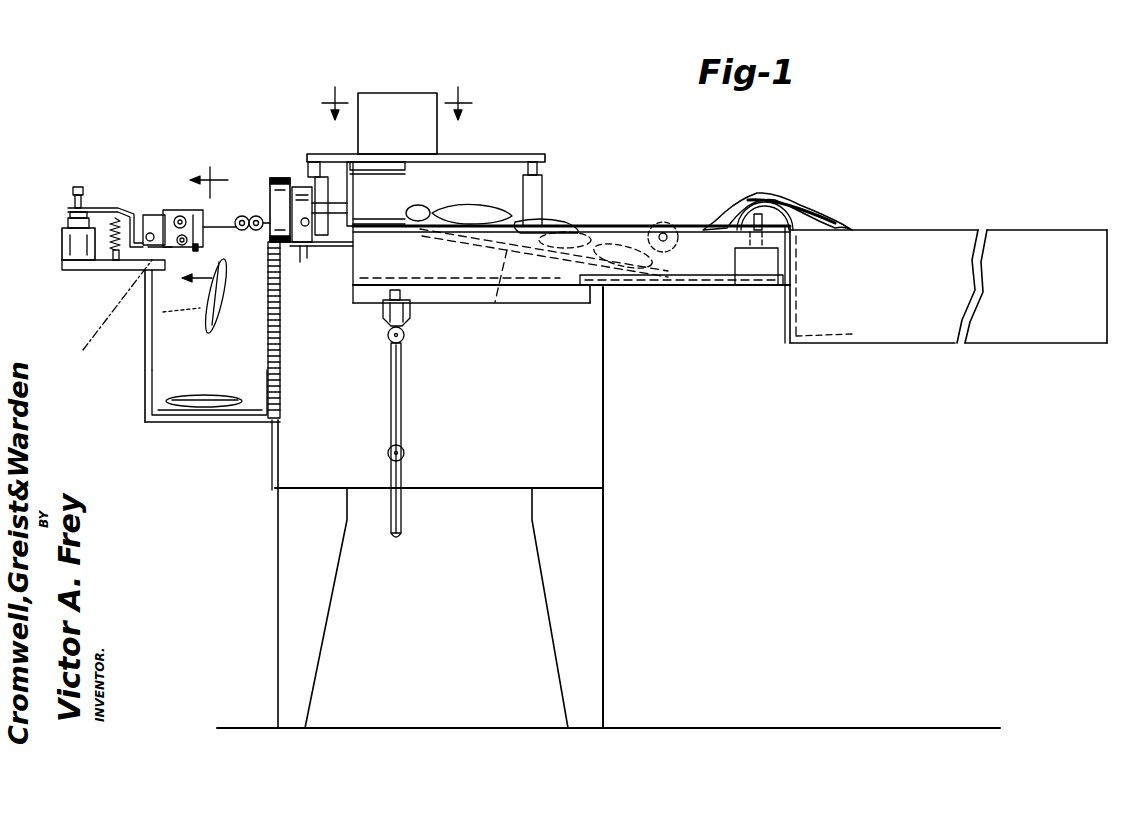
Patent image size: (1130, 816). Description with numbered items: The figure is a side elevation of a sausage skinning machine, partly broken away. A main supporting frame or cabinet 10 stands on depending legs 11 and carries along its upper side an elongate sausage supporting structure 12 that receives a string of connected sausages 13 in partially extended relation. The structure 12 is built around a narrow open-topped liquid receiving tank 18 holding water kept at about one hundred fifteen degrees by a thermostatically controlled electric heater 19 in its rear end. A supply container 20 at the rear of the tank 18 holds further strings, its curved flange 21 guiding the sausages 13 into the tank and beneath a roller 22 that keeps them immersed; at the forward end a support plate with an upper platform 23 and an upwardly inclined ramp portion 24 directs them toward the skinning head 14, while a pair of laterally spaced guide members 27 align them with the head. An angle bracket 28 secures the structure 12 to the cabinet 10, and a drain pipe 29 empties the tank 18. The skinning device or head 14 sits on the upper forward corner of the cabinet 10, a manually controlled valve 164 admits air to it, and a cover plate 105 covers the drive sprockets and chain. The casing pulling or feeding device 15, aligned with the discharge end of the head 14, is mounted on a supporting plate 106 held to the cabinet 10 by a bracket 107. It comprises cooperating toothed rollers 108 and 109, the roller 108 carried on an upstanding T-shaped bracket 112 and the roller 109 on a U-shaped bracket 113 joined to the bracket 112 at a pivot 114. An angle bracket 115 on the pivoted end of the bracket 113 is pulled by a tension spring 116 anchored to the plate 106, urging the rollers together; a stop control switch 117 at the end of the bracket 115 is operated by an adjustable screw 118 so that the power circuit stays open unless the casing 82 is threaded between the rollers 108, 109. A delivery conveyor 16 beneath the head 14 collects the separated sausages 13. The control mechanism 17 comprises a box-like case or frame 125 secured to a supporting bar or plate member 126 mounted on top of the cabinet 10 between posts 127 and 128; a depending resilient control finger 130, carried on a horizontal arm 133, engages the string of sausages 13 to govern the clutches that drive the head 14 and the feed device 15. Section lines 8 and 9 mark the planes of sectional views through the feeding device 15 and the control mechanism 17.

The section line 8- 8 is at (204, 229).
The section line 9- 9 is at (392, 101).
The main supporting frame or cabinet 10 is at (603, 378).
The depending legs 11 is at (603, 523).
The sausage supporting structure 12 is at (622, 290).
The string of connected sausages 13 is at (717, 222).
The sausage skinning device or head 14 is at (295, 182).
The casing pulling or feeding device 15 is at (182, 208).
The delivery conveyor 16 is at (178, 422).
The control mechanism 17 is at (371, 93).
The liquid receiving tank 18 is at (697, 290).
The thermostatically controlled electric heater 19 is at (743, 290).
The supply container 20 is at (840, 334).
The curved flange 21 is at (800, 232).
The roller 22 is at (665, 222).
The upper platform 23 is at (387, 228).
The upwardly inclined ramp portion 24 is at (495, 302).
The guide members 27 is at (403, 207).
The angle bracket 28 is at (553, 305).
The drain pipe 29 is at (414, 305).
The casing 82 is at (95, 327).
The cover plate 105 is at (267, 257).
The supporting plate 106 is at (70, 264).
The bracket 107 is at (145, 353).
The roller 108 is at (200, 213).
The roller 109 is at (200, 250).
The T-shaped bracket 112 is at (157, 215).
The U-shaped bracket 113 is at (170, 247).
The pivot 114 is at (152, 228).
The angle bracket 115 is at (68, 211).
The tension spring 116 is at (117, 258).
The stop control switch 117 is at (65, 247).
The adjustable screw 118 is at (73, 192).
The box-like case or frame 125 is at (393, 93).
The supporting bar or plate member 126 is at (490, 148).
The post 127 is at (542, 194).
The post 128 is at (302, 185).
The control finger 130 is at (353, 190).
The horizontal arm 133 is at (405, 170).
The manually controlled valve 164 is at (315, 246).